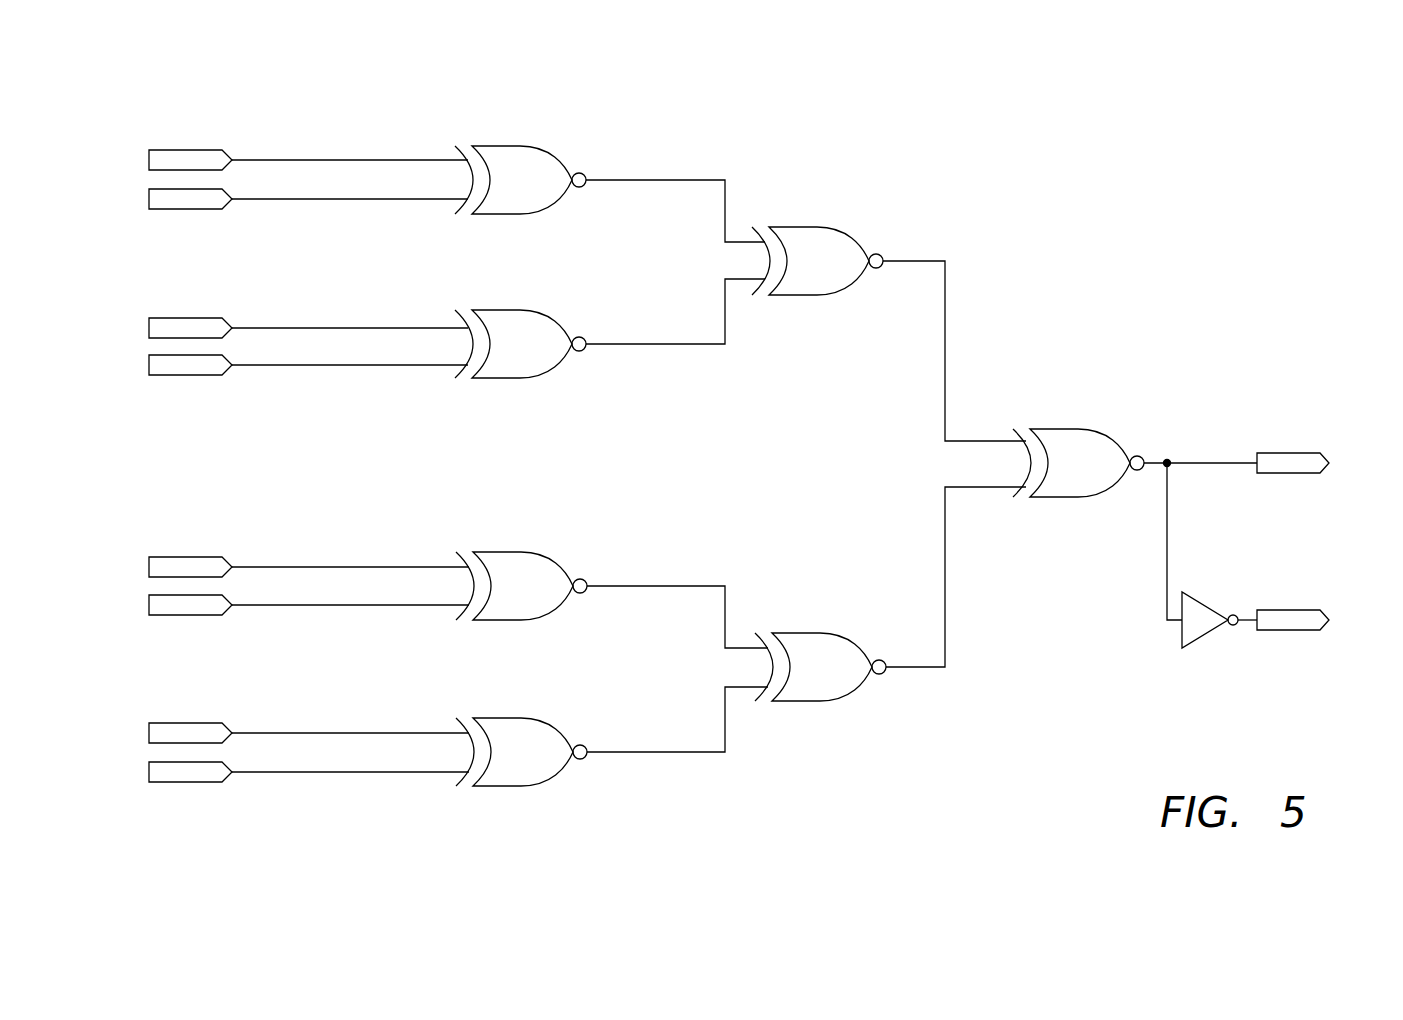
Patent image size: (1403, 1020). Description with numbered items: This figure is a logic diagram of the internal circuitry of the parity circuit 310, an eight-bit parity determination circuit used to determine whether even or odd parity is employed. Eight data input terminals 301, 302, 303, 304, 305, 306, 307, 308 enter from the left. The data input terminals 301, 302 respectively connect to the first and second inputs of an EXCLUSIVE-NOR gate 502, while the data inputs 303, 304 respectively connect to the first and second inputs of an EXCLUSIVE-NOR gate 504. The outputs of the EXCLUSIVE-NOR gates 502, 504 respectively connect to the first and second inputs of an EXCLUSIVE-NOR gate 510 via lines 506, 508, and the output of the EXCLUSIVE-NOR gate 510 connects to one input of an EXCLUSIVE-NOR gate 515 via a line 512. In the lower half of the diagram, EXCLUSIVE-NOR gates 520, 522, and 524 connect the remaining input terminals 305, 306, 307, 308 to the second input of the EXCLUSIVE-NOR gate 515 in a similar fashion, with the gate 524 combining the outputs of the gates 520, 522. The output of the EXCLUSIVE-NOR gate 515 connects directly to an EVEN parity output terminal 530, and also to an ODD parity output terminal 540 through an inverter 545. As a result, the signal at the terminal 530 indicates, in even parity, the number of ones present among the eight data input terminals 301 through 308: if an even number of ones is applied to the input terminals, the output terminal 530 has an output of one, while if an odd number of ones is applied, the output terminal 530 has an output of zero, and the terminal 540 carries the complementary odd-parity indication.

The parity circuit 310 is at (795, 99).
The data input terminal 301 is at (180, 151).
The data input terminal 302 is at (185, 209).
The data input terminal 303 is at (180, 318).
The data input terminal 304 is at (173, 377).
The data input terminal 305 is at (175, 556).
The data input terminal 306 is at (193, 615).
The data input terminal 307 is at (183, 723).
The data input terminal 308 is at (175, 783).
The EXCLUSIVE-NOR gate 502 is at (515, 145).
The EXCLUSIVE-NOR gate 504 is at (512, 310).
The line 506 is at (725, 215).
The line 508 is at (725, 312).
The EXCLUSIVE-NOR gate 510 is at (813, 228).
The line 512 is at (917, 260).
The EXCLUSIVE-NOR gate 515 is at (1058, 431).
The EXCLUSIVE-NOR gate 520 is at (515, 552).
The EXCLUSIVE-NOR gate 522 is at (508, 717).
The EXCLUSIVE-NOR gate 524 is at (812, 633).
The EVEN parity output terminal 530 is at (1320, 473).
The ODD parity output terminal 540 is at (1320, 609).
The inverter 545 is at (1182, 592).